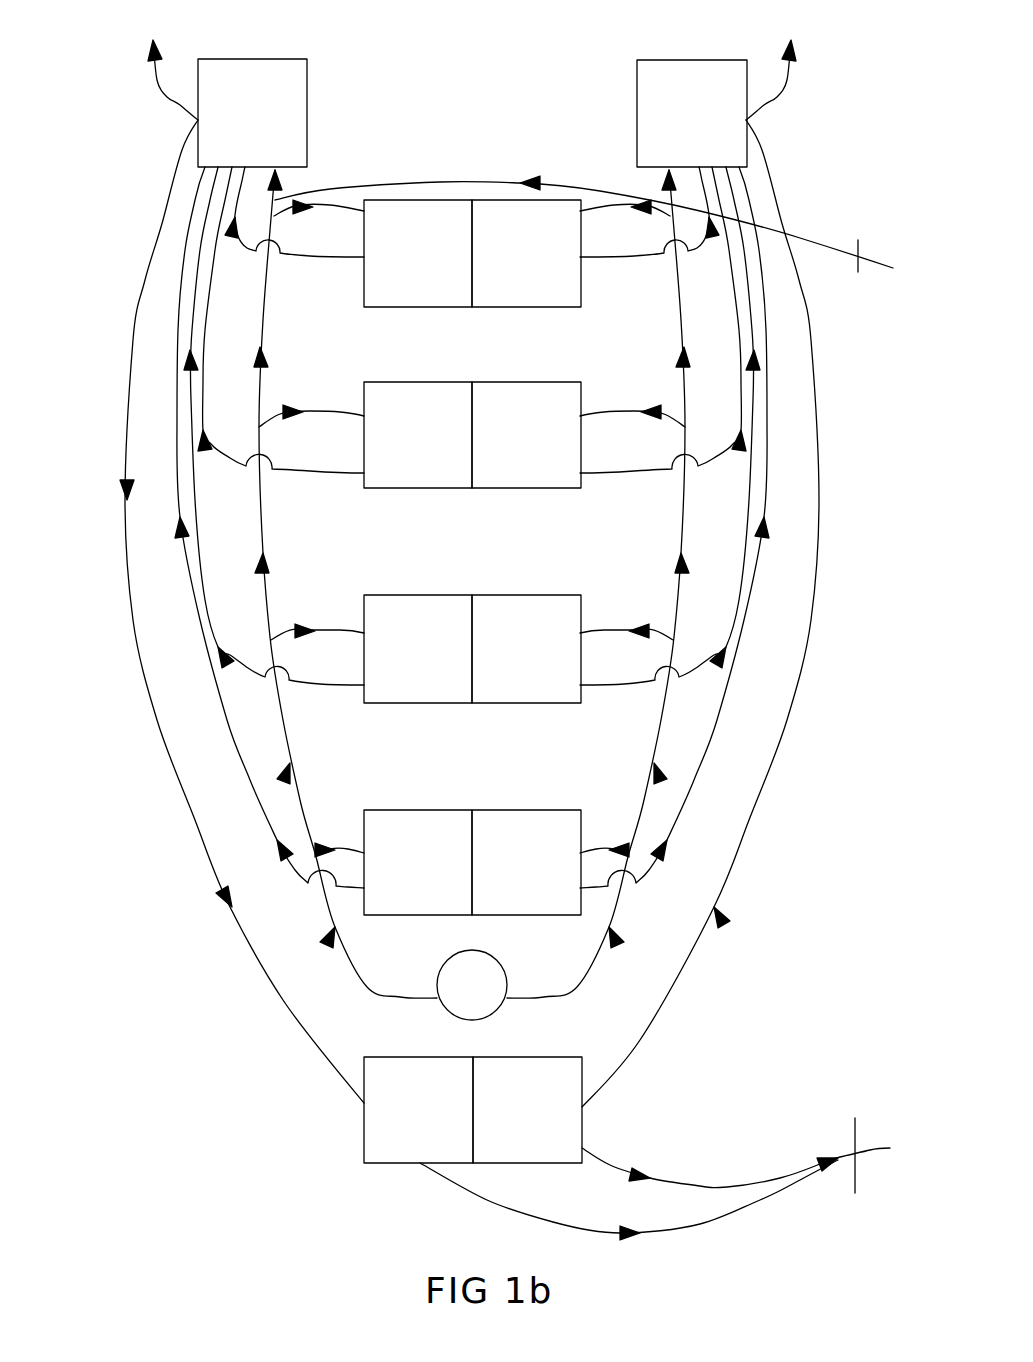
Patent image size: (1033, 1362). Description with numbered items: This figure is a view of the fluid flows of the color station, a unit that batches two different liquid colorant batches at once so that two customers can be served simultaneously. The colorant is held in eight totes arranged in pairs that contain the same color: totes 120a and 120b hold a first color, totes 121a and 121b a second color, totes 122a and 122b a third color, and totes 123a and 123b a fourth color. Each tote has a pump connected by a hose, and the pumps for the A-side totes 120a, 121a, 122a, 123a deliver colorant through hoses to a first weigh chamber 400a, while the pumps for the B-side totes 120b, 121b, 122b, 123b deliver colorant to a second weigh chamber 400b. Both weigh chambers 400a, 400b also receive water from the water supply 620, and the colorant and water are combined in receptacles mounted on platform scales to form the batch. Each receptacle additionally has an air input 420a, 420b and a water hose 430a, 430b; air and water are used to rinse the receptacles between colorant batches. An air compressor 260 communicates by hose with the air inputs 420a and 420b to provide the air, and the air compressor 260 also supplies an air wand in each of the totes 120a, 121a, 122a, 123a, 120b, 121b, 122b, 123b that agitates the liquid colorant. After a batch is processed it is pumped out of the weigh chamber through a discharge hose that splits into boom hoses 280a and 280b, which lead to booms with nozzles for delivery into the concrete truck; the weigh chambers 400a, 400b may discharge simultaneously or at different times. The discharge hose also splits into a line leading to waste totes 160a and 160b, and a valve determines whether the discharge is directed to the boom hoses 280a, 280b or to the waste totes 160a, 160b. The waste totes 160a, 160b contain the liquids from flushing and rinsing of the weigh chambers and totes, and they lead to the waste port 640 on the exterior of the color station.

The weigh chamber 400a is at (217, 72).
The weigh chamber 400b is at (652, 70).
The boom hose 280a is at (156, 86).
The boom hose 280b is at (836, 100).
The water hose 430a is at (300, 173).
The water hose 430b is at (747, 182).
The air input 420a is at (273, 200).
The air input 420b is at (683, 288).
The water supply 620 is at (878, 268).
The waste port 640 is at (880, 1148).
The tote 123a is at (523, 290).
The tote 123b is at (435, 290).
The tote 122a is at (514, 400).
The tote 122b is at (423, 407).
The tote 121a is at (517, 615).
The tote 121b is at (424, 617).
The tote 120a is at (515, 825).
The tote 120b is at (425, 825).
The waste tote 160a is at (392, 1135).
The waste tote 160b is at (553, 1125).
The air compressor 260 is at (487, 1017).